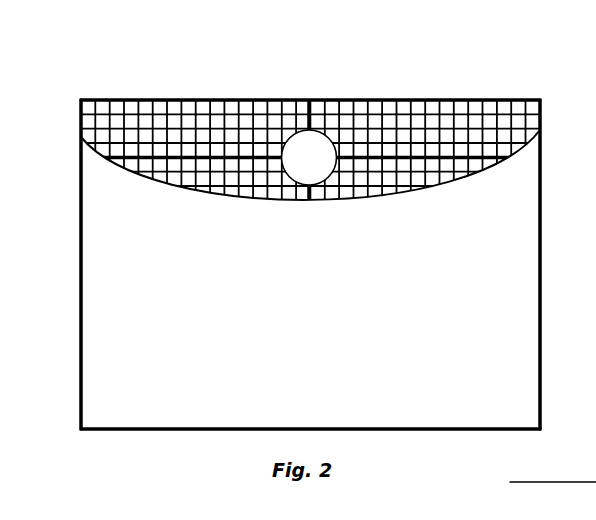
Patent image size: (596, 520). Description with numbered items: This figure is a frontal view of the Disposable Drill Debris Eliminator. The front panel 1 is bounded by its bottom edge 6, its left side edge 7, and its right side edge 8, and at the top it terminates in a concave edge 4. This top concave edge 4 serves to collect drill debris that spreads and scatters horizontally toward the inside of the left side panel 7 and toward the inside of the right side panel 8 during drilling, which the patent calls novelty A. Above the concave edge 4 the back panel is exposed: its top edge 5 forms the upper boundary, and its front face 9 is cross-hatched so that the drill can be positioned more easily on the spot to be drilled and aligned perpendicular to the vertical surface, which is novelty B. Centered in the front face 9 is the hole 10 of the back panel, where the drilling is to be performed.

The front panel 1 is at (138, 358).
The top concave edge of the front panel 4 is at (280, 216).
The top edge of the back panel 5 is at (337, 87).
The bottom edge of the front panel 6 is at (151, 443).
The left side edge of the front panel 7 is at (66, 248).
The right side edge of the front panel 8 is at (554, 314).
The front face of the back panel 9 is at (457, 114).
The hole of the back panel 10 is at (297, 147).